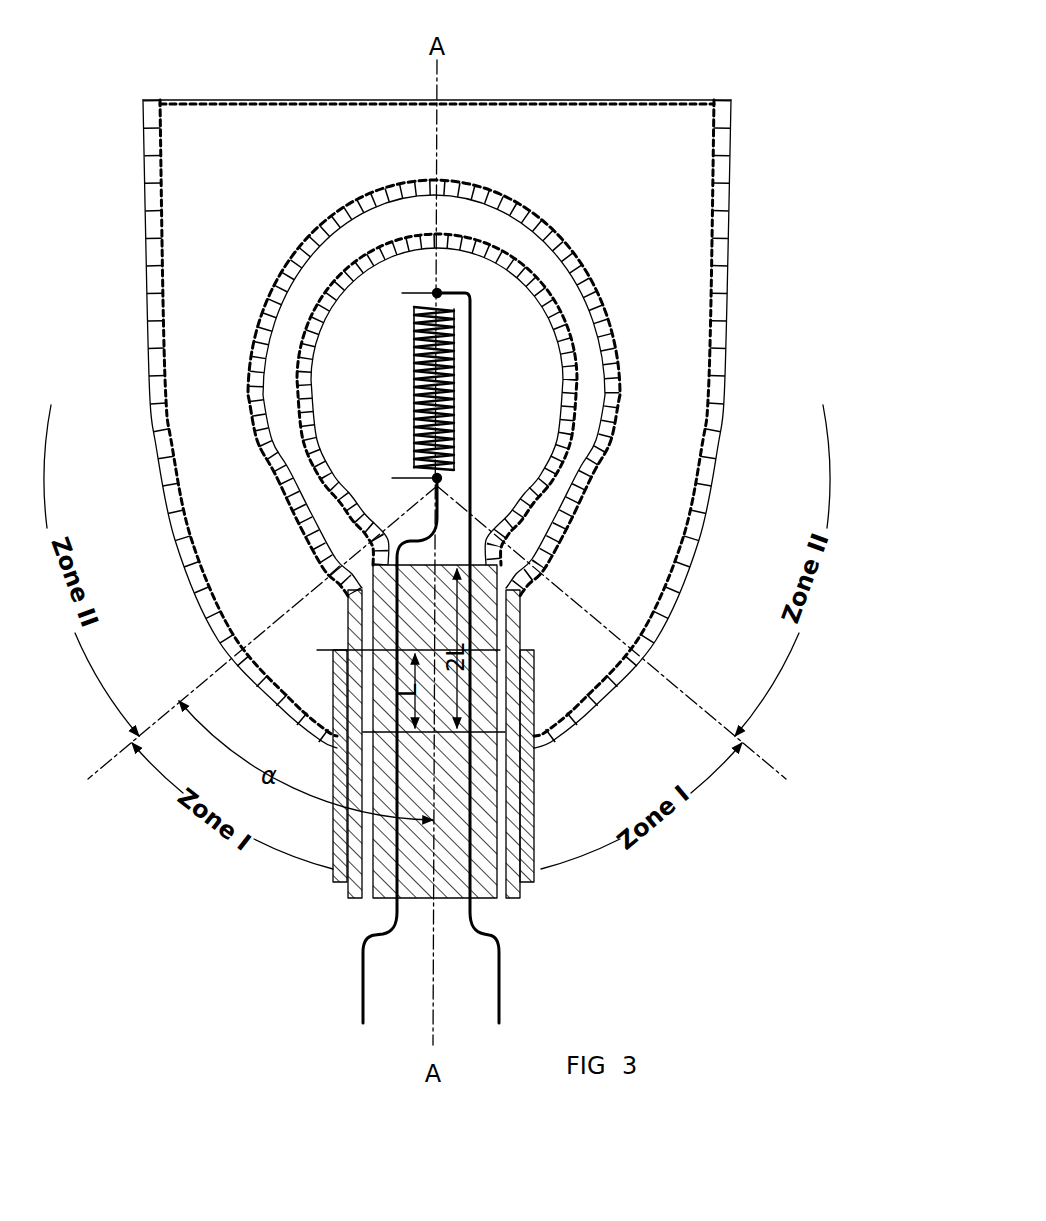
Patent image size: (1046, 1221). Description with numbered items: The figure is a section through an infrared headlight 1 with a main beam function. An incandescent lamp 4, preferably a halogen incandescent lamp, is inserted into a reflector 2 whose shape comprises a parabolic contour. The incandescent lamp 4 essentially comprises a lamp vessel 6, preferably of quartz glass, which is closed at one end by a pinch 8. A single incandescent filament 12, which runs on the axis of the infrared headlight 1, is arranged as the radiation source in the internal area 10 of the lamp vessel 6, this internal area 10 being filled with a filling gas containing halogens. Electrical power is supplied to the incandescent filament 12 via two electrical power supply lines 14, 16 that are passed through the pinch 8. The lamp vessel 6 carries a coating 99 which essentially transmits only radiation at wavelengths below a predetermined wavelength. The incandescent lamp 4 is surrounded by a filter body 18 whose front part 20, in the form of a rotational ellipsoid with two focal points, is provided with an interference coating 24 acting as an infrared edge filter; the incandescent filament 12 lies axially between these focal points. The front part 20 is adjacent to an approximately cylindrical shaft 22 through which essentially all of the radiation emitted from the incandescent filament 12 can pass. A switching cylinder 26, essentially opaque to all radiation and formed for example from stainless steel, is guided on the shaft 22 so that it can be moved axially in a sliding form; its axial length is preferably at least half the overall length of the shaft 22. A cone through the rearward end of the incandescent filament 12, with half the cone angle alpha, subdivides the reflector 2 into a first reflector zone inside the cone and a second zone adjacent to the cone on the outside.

The infrared headlight 1 is at (657, 60).
The reflector 2 is at (142, 291).
The incandescent lamp 4 is at (311, 289).
The lamp vessel 6 is at (560, 318).
The pinch 8 is at (464, 570).
The internal area 10 is at (514, 447).
The incandescent filament 12 is at (450, 352).
The electrical power supply line 14 is at (362, 975).
The electrical power supply line 16 is at (502, 975).
The filter body 18 is at (564, 223).
The front part 20 is at (254, 427).
The shaft 22 is at (346, 612).
The interference coating 24 is at (256, 356).
The switching cylinder 26 is at (337, 680).
The coating 99 is at (397, 238).